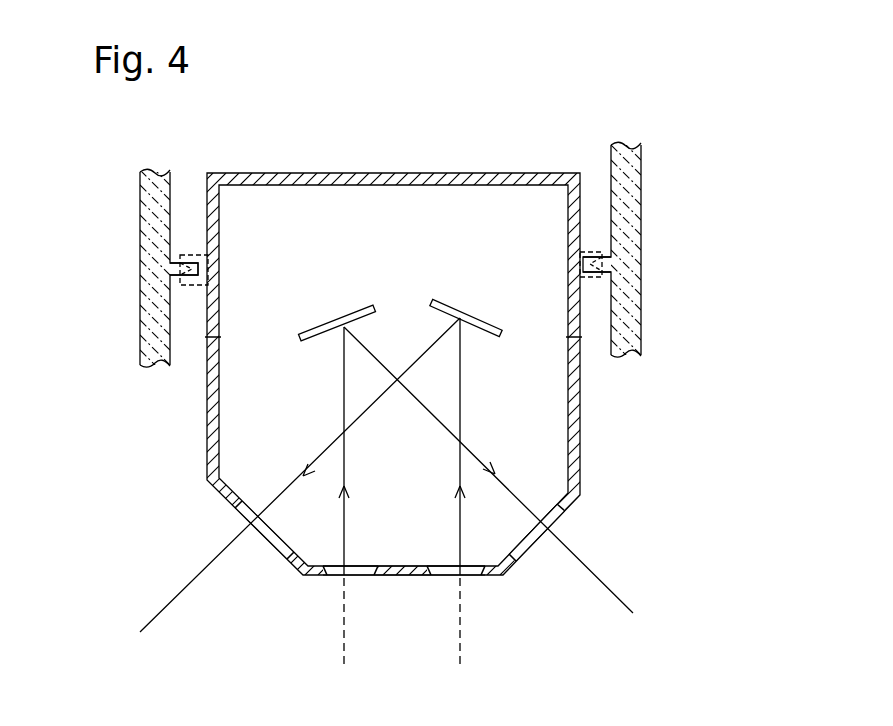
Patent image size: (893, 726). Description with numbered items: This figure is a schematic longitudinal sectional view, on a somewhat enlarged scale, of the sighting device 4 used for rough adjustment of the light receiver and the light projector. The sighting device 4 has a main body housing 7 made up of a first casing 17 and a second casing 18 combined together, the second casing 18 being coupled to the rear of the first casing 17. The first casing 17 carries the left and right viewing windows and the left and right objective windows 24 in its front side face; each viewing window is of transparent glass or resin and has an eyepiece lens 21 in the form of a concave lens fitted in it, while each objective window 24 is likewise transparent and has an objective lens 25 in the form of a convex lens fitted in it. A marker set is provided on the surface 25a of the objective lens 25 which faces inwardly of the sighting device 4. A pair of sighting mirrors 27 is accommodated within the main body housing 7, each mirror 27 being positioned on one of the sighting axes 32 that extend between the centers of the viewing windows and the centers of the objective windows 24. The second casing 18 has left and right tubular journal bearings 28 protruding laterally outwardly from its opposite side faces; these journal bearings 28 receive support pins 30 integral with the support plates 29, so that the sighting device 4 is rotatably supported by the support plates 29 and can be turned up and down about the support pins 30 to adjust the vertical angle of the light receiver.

The sighting device 4 is at (446, 406).
The main body housing 7 is at (446, 406).
The first casing 17 is at (660, 372).
The second casing 18 is at (580, 325).
The eyepiece lens 21 is at (262, 525).
The objective window 24 is at (380, 568).
The objective lens 25 is at (335, 576).
The surface of the objective lens 25a is at (365, 565).
The sighting mirror 27 is at (330, 324).
The tubular journal bearing 28 is at (200, 255).
The support plate 29 is at (142, 255).
The support pin 30 is at (200, 280).
The sighting axis 32 is at (437, 345).